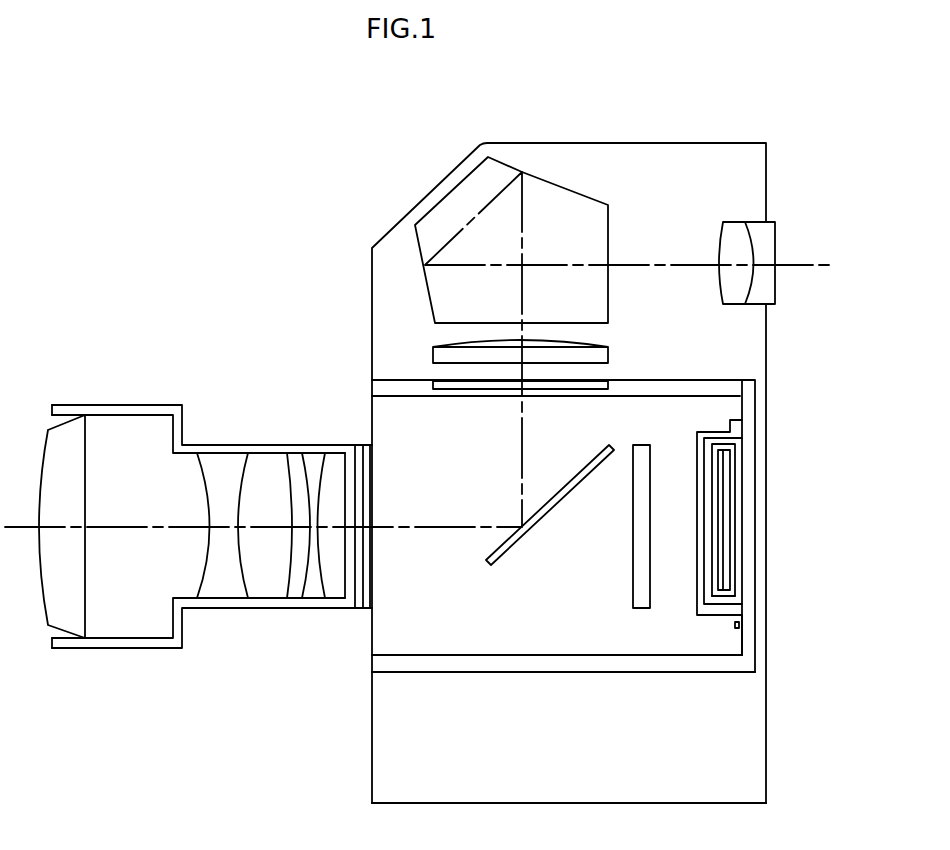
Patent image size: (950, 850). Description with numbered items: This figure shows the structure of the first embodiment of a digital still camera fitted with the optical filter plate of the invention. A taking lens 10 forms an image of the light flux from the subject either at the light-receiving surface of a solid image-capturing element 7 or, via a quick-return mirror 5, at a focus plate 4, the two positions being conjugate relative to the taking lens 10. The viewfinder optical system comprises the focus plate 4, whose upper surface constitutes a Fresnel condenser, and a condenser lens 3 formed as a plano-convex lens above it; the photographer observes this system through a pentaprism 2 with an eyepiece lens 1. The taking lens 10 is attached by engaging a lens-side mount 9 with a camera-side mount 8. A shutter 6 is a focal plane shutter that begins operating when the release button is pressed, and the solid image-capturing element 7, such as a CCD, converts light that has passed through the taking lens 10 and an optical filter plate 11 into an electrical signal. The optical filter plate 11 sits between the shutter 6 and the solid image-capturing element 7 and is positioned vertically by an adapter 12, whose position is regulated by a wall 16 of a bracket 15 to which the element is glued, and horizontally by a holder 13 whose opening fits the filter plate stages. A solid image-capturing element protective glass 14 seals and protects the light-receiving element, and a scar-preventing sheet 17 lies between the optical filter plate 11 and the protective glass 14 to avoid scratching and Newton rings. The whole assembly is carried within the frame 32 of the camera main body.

The eyepiece lens 1 is at (772, 237).
The pentaprism 2 is at (462, 203).
The condenser lens 3 is at (443, 353).
The focus plate 4 is at (443, 385).
The quick-return mirror 5 is at (609, 445).
The shutter 6 is at (650, 447).
The solid image-capturing element 7 is at (737, 475).
The camera-side mount 8 is at (368, 447).
The lens-side mount 9 is at (360, 447).
The taking lens 10 is at (218, 603).
The optical filter plate 11 is at (797, 406).
The adapter 12 is at (707, 545).
The holder 13 is at (738, 633).
The solid image-capturing element protective glass 14 is at (730, 512).
The bracket 15 is at (748, 583).
The wall 16 is at (640, 396).
The scar-preventing sheet 17 is at (720, 595).
The frame 32 is at (698, 665).